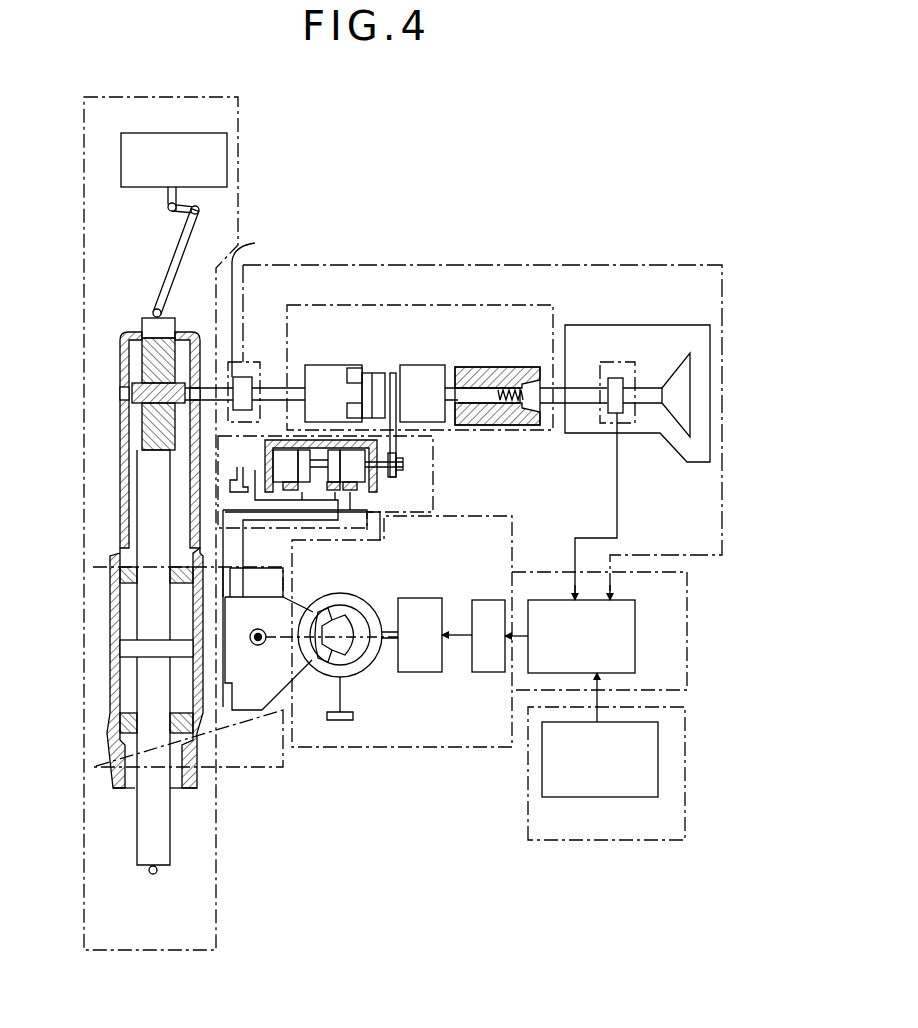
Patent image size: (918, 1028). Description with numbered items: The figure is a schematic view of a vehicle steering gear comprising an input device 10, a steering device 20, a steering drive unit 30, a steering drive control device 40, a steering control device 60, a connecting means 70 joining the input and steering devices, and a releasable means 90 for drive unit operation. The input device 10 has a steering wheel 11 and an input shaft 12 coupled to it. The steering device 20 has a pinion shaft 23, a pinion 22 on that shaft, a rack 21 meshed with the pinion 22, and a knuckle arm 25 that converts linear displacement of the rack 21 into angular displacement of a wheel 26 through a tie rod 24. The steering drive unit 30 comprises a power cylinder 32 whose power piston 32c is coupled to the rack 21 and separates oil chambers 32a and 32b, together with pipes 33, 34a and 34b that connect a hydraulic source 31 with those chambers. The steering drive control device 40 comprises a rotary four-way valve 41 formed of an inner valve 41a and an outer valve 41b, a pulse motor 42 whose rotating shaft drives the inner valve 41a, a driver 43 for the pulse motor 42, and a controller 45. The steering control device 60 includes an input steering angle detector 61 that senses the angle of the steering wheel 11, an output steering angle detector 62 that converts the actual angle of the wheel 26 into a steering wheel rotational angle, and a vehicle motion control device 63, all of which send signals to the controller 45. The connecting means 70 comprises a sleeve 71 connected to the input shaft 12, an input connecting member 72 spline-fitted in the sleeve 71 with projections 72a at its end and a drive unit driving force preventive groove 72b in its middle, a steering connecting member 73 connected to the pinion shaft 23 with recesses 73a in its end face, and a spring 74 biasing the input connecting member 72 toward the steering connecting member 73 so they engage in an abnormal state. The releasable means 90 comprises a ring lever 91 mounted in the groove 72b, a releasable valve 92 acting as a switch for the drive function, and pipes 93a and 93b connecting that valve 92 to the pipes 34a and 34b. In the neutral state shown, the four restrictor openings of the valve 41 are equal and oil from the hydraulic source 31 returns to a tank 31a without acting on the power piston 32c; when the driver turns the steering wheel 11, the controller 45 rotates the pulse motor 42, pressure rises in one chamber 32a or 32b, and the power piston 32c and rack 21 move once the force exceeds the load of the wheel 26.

The input device 10 is at (697, 318).
The steering wheel 11 is at (682, 373).
The input shaft 12 is at (584, 392).
The steering device 20 is at (242, 112).
The rack 21 is at (142, 365).
The pinion 22 is at (124, 410).
The pinion shaft 23 is at (206, 365).
The tie rod 24 is at (163, 265).
The knuckle arm 25 is at (178, 215).
The wheel 26 is at (178, 133).
The steering drive unit 30 is at (271, 770).
The hydraulic source 31 is at (242, 637).
The tank 31a is at (235, 467).
The power cylinder 32 is at (115, 684).
The oil chamber 32a is at (118, 628).
The oil chamber 32b is at (115, 713).
The power piston 32c is at (128, 649).
The pipe 33 is at (262, 650).
The pipe 34a is at (268, 646).
The pipe 34b is at (268, 748).
The steering drive control device 40 is at (688, 597).
The rotary four-way valve 41 is at (378, 606).
The inner valve 41a is at (338, 605).
The outer valve 41b is at (362, 596).
The pulse motor 42 is at (428, 598).
The driver 43 is at (490, 600).
The controller 45 is at (636, 613).
The steering control device 60 is at (667, 843).
The input steering angle detector 61 is at (622, 378).
The output steering angle detector 62 is at (252, 383).
The vehicle motion control device 63 is at (633, 797).
The connecting means 70 is at (492, 302).
The sleeve 71 is at (512, 368).
The input connecting member 72 is at (435, 365).
The projections 72a is at (380, 372).
The drive unit driving force preventive groove 72b is at (404, 360).
The steering connecting member 73 is at (319, 365).
The recesses 73a is at (350, 373).
The spring 74 is at (520, 408).
The releasable means for drive unit operation 90 is at (438, 443).
The drive unit operation releasable ring lever 91 is at (385, 450).
The drive unit operation releasable valve 92 is at (372, 493).
The pipe 93a is at (266, 560).
The pipe 93b is at (258, 735).